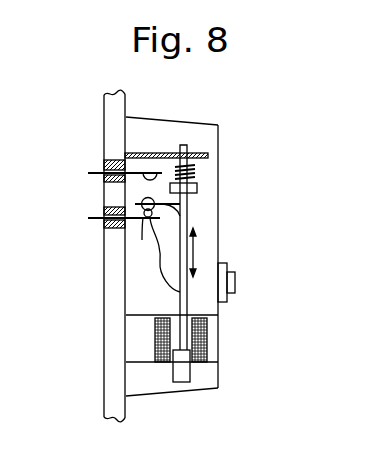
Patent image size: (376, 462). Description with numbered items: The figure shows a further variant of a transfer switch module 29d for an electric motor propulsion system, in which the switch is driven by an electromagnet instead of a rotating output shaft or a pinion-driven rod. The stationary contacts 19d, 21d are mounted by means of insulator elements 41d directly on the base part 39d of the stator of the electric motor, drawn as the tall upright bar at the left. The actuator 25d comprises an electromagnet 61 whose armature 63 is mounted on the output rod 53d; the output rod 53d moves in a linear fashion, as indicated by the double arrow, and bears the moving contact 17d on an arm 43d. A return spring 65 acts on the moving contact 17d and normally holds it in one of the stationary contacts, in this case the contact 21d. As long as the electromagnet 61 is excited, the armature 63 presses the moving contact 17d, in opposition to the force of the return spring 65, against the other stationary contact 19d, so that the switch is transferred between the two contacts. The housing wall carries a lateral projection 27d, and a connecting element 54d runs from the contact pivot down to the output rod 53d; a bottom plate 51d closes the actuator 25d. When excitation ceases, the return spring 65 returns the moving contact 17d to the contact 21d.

The base part 39d is at (107, 397).
The actuator 25d is at (219, 362).
The switch module 29d is at (221, 131).
The housing bottom wall 51d is at (223, 383).
The insulator elements 41d is at (112, 164).
The stationary contact 19d is at (153, 172).
The moving contact 17d is at (152, 198).
The stationary contact 21d is at (146, 218).
The connecting wire 54d is at (160, 272).
The arm 43d is at (187, 213).
The return spring 65 is at (196, 169).
The output rod 53d is at (196, 255).
The side protrusion 27d is at (236, 283).
The electromagnet 61 is at (210, 330).
The armature 63 is at (183, 376).